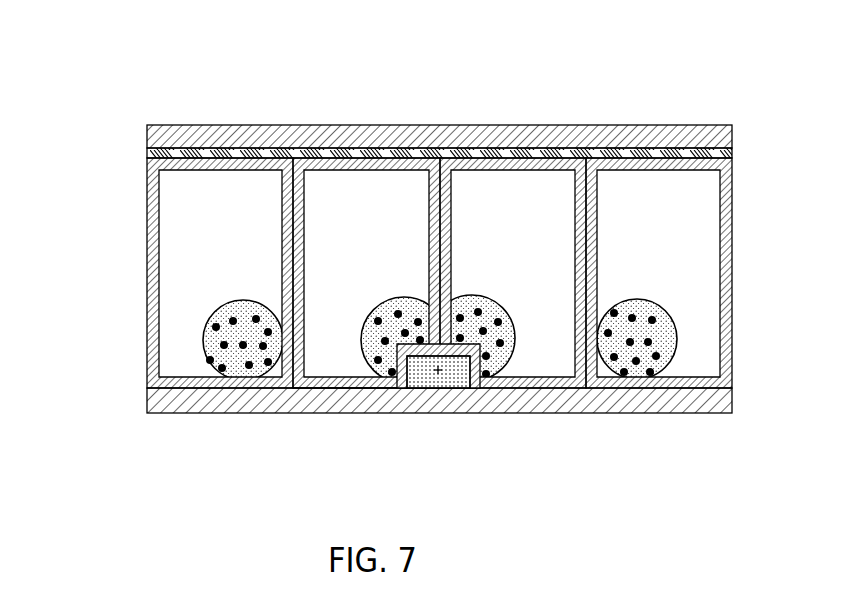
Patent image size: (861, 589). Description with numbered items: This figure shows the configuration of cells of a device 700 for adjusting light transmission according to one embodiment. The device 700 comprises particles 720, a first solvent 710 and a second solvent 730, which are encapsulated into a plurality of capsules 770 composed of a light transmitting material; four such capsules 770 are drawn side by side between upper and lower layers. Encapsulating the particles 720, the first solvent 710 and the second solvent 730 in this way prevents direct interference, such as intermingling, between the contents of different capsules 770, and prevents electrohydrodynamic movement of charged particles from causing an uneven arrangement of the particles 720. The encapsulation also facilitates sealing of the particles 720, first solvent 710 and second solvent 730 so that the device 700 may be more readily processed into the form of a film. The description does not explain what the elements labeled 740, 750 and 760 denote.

The device for adjusting light transmission 700 is at (92, 29).
The first solvent 710 is at (380, 382).
The particles 720 is at (397, 385).
The second solvent 730 is at (347, 318).
The light emitting diode chip 740 is at (463, 380).
The adhesive layer 750 is at (148, 159).
The substrate plate 760 is at (148, 141).
The capsules 770 is at (148, 265).